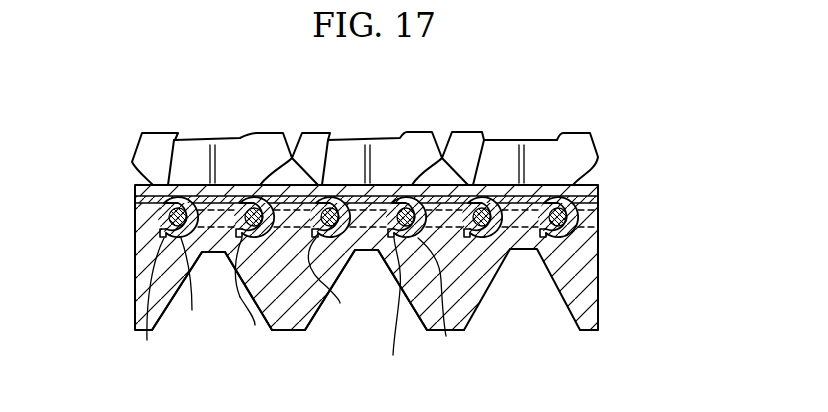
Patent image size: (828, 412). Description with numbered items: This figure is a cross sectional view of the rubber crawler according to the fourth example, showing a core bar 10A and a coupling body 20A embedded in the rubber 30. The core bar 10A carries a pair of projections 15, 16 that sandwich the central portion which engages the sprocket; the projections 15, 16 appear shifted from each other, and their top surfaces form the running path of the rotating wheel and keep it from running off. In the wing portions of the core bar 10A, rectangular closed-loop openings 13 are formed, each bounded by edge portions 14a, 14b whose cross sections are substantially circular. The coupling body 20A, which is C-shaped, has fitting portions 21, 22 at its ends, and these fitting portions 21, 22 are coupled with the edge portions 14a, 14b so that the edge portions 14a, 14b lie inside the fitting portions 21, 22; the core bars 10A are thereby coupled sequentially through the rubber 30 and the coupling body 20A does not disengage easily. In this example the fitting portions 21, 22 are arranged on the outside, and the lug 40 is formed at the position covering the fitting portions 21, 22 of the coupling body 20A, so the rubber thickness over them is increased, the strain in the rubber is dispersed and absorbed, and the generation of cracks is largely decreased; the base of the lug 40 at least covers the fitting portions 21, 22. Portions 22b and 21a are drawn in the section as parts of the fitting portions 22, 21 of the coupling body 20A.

The core bar 10A is at (611, 132).
The projection 15 is at (310, 145).
The projection 16 is at (393, 150).
The coupling body 20A is at (612, 233).
The rubber 30 is at (133, 265).
The edge portion 14a is at (592, 207).
The edge portion 14b is at (504, 256).
The closed-loop opening 13 is at (366, 260).
The lug 40 is at (302, 331).
The leg portion 22b is at (247, 306).
The fitting portion 22 is at (197, 289).
The fitting portion 21 is at (238, 293).
The terminal contact portion 21a is at (255, 325).